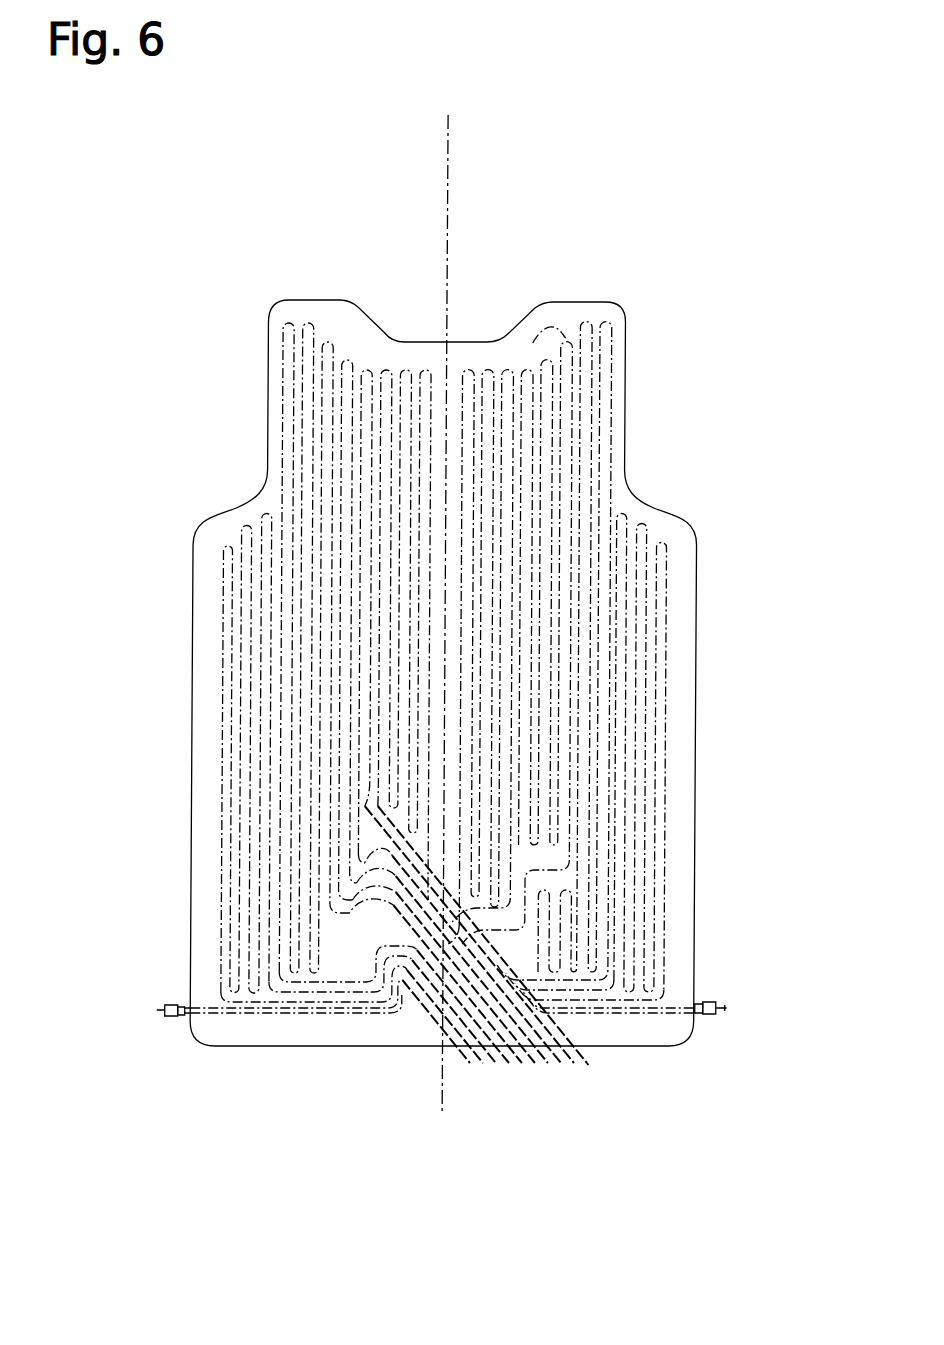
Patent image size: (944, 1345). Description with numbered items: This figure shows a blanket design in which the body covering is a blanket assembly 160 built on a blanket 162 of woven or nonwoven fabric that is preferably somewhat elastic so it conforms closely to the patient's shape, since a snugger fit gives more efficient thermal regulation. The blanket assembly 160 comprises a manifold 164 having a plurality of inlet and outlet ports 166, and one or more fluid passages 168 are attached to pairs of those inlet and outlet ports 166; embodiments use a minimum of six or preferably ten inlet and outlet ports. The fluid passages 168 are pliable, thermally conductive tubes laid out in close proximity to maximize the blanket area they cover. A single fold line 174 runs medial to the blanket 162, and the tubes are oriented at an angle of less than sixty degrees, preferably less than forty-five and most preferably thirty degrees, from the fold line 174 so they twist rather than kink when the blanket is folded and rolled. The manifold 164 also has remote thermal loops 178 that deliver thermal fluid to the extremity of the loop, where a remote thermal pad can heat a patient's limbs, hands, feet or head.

The blanket assembly 160 is at (175, 312).
The blanket 162 is at (268, 410).
The manifold 164 is at (597, 1074).
The inlet and outlet ports 166 is at (594, 1073).
The fluid passages 168 is at (297, 276).
The fold line 174 is at (448, 276).
The remote thermal loops 178 is at (188, 1018).